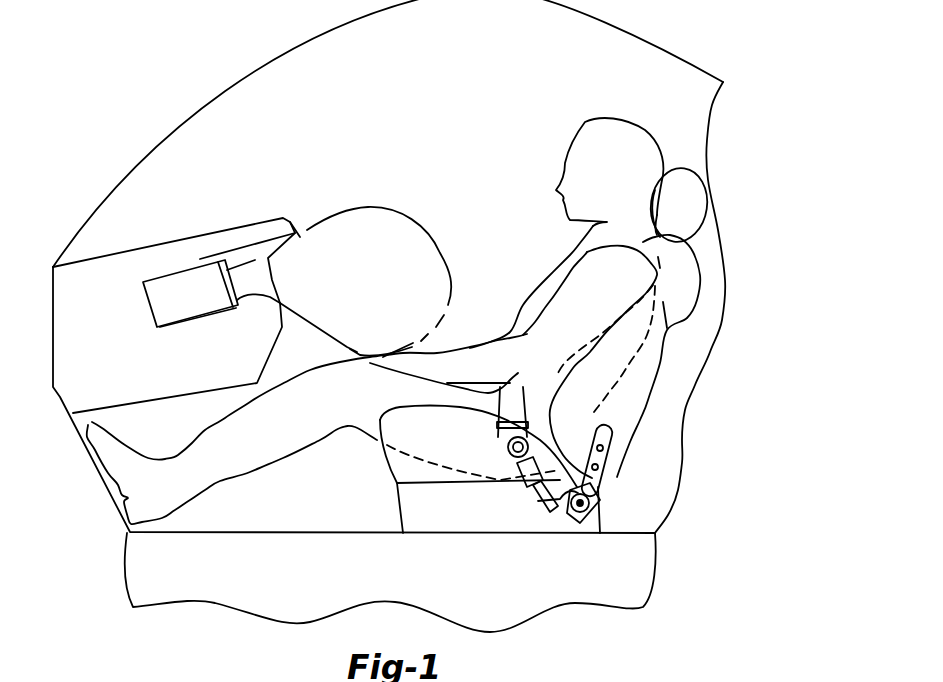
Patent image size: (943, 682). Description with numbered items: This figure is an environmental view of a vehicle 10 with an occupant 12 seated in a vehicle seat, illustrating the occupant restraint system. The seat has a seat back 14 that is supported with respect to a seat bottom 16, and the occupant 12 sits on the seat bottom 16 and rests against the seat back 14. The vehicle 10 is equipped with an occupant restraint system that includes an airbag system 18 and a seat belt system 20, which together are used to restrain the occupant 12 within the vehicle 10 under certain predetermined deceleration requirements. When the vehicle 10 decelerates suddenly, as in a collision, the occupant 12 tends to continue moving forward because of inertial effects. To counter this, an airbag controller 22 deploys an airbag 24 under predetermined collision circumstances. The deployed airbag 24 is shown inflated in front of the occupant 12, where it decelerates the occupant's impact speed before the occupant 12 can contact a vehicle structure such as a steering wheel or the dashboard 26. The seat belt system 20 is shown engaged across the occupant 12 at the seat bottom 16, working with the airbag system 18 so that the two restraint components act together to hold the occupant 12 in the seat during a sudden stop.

The vehicle 10 is at (131, 160).
The occupant 12 is at (603, 277).
The seat back 14 is at (667, 330).
The seat bottom 16 is at (380, 477).
The airbag system 18 is at (173, 326).
The seat belt system 20 is at (538, 497).
The airbag controller 22 is at (175, 292).
The airbag 24 is at (357, 227).
The dashboard 26 is at (263, 350).